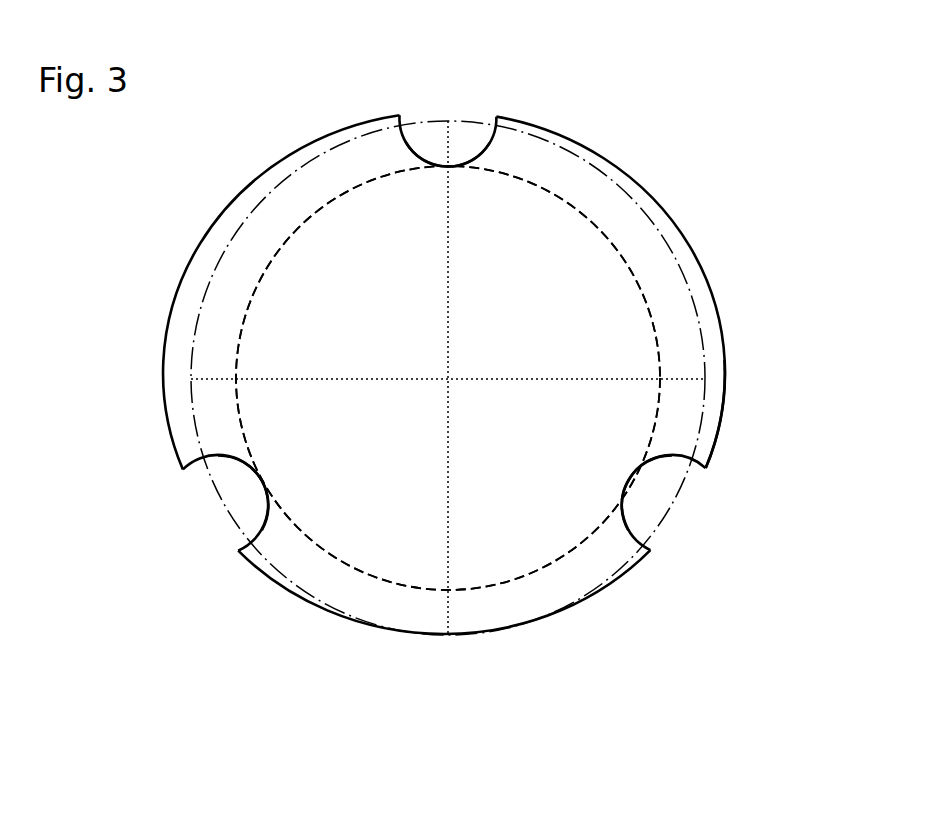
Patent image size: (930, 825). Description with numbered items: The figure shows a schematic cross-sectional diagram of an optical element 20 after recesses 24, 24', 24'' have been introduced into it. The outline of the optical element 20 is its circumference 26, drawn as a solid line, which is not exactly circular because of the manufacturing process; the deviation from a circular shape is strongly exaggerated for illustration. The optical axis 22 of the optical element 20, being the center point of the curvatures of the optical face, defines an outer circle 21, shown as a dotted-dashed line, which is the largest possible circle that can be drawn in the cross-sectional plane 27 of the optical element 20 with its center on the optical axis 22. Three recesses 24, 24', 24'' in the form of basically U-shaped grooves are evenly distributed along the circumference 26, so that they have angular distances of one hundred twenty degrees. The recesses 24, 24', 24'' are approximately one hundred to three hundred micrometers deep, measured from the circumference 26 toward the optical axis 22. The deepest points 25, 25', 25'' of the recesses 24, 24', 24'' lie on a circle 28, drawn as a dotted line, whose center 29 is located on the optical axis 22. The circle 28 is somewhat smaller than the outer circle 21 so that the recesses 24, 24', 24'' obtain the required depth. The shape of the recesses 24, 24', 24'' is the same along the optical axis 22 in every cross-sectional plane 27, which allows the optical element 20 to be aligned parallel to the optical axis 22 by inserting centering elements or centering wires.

The optical element 20 is at (291, 100).
The outer circle 21 is at (202, 297).
The optical axis 22 is at (448, 378).
The recess 24 is at (499, 94).
The recess 24' is at (685, 563).
The recess 24'' is at (184, 495).
The deepest point 25 is at (431, 87).
The deepest point 25' is at (708, 514).
The deepest point 25'' is at (220, 527).
The circumference 26 is at (715, 448).
The cross-sectional plane 27 is at (567, 312).
The circle 28 is at (622, 250).
The center 29 is at (450, 380).